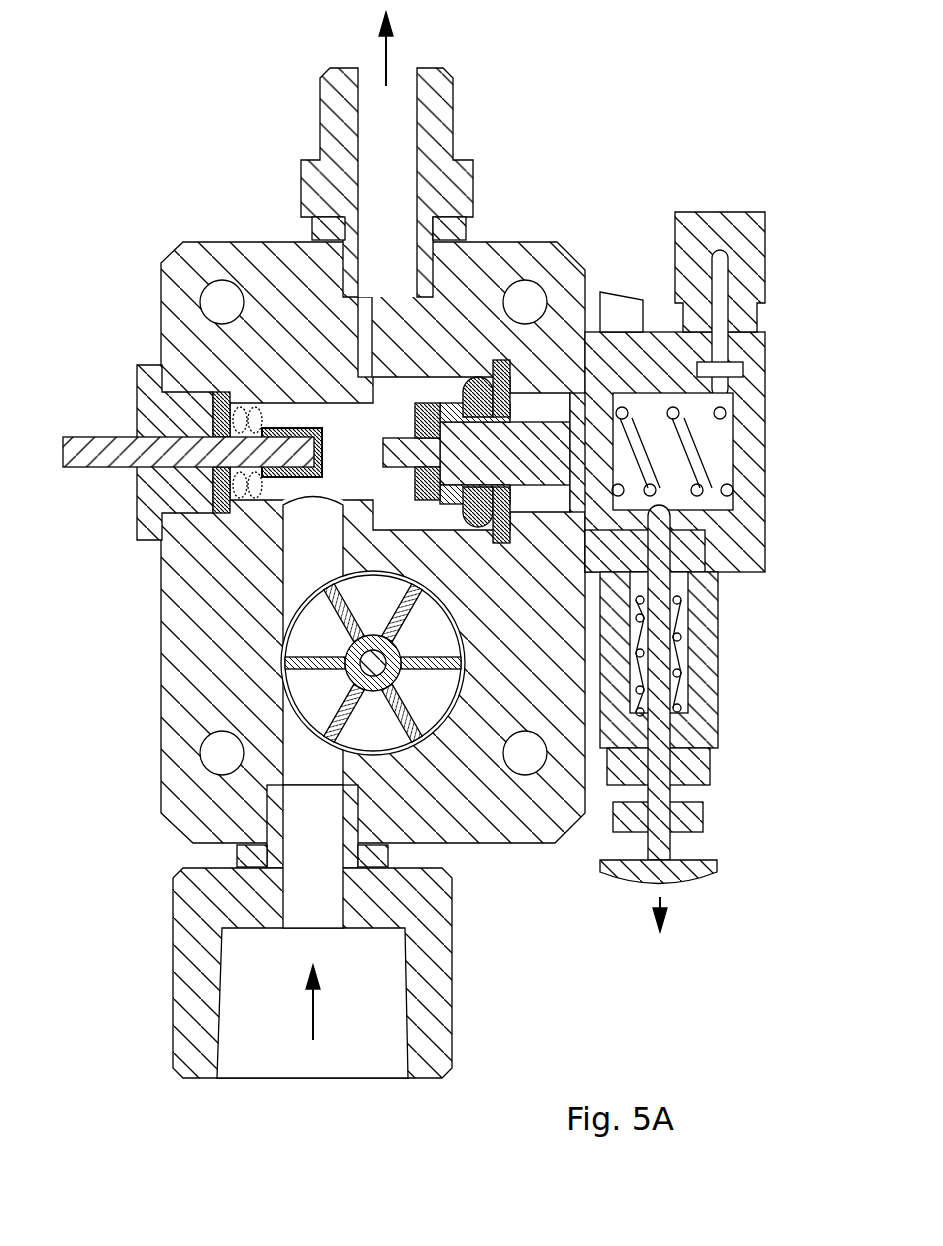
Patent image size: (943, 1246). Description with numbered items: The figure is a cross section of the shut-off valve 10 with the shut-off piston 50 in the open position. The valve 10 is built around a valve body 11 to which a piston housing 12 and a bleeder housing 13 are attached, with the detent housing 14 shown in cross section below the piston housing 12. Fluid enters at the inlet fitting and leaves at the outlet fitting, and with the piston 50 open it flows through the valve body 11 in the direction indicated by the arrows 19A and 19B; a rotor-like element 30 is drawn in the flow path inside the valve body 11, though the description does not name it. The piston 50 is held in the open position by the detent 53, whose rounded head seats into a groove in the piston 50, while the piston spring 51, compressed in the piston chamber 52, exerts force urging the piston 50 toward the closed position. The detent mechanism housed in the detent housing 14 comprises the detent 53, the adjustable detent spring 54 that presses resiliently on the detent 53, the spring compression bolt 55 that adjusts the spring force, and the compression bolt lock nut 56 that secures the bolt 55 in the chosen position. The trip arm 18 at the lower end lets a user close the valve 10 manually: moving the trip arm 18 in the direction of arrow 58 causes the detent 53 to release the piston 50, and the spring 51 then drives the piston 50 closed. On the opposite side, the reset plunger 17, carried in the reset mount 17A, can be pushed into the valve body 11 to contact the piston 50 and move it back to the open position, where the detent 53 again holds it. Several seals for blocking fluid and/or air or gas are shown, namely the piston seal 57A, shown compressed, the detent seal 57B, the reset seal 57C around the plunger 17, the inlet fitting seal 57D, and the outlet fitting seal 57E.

The shut-off valve 10 is at (120, 136).
The valve body 11 is at (161, 670).
The piston housing 12 is at (765, 366).
The bleeder housing 13 is at (745, 210).
The detent housing 14 is at (718, 690).
The reset plunger 17 is at (80, 455).
The reset mount 17A is at (137, 398).
The trip arm 18 is at (717, 862).
The fluid flow arrow 19A is at (313, 1007).
The fluid flow arrow 19B is at (388, 50).
The metering wheel 30 is at (355, 650).
The shut-off piston 50 is at (592, 393).
The piston spring 51 is at (700, 458).
The piston chamber 52 is at (710, 432).
The detent 53 is at (690, 556).
The detent spring 54 is at (672, 643).
The spring compression bolt 55 is at (703, 810).
The compression bolt lock nut 56 is at (712, 757).
The piston seal 57A is at (478, 392).
The detent seal 57B is at (685, 530).
The reset seal 57C is at (225, 390).
The inlet fitting seal 57D is at (237, 853).
The outlet fitting seal 57E is at (312, 230).
The trip arm direction arrow 58 is at (660, 905).